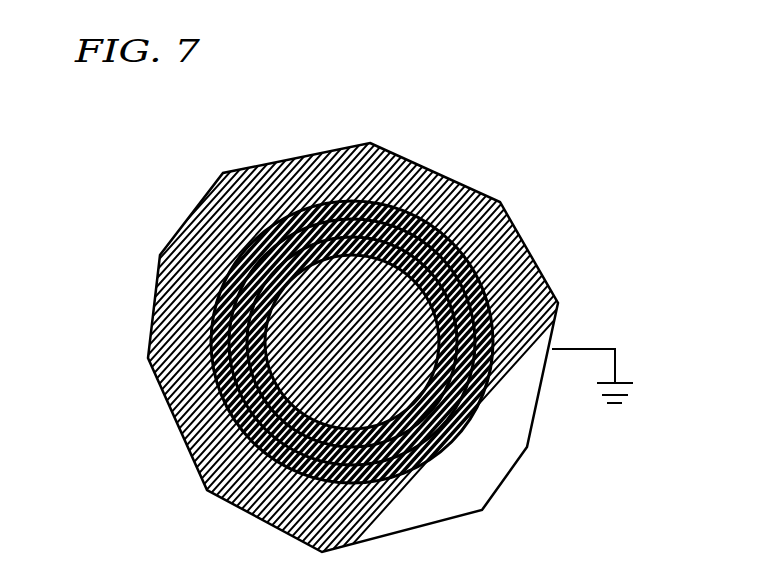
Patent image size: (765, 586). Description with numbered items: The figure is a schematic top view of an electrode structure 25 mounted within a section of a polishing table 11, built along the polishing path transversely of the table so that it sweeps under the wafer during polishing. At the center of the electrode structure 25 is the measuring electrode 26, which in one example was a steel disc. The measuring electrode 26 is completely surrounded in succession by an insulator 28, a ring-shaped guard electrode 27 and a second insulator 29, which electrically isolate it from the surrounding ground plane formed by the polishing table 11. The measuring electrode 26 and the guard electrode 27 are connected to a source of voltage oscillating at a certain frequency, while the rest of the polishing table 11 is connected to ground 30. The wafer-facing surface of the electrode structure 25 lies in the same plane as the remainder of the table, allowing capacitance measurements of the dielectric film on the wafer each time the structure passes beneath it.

The polishing table 11 is at (498, 230).
The electrode structure 25 is at (217, 311).
The measuring electrode 26 is at (287, 353).
The guard electrode 27 is at (352, 222).
The insulator 28 is at (277, 272).
The insulator 29 is at (303, 228).
The ground 30 is at (552, 349).